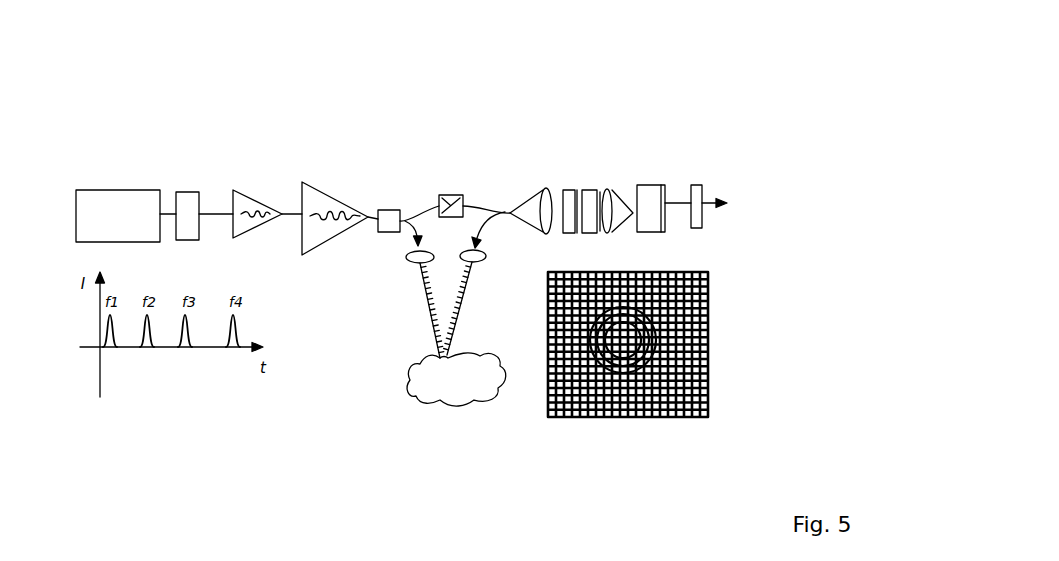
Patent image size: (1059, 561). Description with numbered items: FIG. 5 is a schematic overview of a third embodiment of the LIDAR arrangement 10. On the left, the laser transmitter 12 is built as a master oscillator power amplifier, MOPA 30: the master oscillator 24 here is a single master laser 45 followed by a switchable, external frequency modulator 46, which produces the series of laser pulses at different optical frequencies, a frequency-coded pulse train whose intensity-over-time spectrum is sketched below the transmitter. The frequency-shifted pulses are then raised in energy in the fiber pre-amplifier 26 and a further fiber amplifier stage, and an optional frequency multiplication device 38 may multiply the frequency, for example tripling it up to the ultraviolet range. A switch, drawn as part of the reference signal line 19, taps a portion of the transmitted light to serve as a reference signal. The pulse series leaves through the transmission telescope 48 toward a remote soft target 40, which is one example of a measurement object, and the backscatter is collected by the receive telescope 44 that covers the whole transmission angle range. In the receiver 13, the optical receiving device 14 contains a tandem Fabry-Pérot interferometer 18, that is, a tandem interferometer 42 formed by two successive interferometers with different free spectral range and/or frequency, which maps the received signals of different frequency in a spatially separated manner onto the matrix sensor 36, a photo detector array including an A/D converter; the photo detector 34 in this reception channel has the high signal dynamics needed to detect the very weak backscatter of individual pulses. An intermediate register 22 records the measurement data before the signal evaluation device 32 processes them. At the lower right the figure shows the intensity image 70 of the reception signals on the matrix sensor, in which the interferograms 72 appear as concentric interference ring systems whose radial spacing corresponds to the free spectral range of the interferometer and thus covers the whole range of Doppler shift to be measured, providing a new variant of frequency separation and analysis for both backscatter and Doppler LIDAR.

The LIDAR arrangement 10 is at (343, 378).
The laser transmitter 12 is at (388, 77).
The receiver 13 is at (555, 100).
The optical receiving device 14 is at (570, 175).
The interferometer 18 is at (583, 182).
The reference signal line 19 is at (448, 195).
The intermediate register 22 is at (697, 193).
The master oscillator 24 is at (168, 133).
The pre-amplifier 26 is at (250, 197).
The master oscillator power amplifier 30 is at (305, 107).
The signal evaluation device 32 is at (683, 173).
The photo detector 34 is at (662, 197).
The matrix sensor 36 is at (672, 145).
The frequency multiplication device 38 is at (388, 212).
The soft target 40 is at (473, 385).
The tandem interferometer 42 is at (583, 180).
The receive telescope 44 is at (483, 253).
The master laser 45 is at (110, 190).
The switchable modulator 46 is at (190, 198).
The transmission telescope 48 is at (408, 262).
The intensity image of the reception signals 70 is at (708, 283).
The interferograms 72 is at (708, 357).